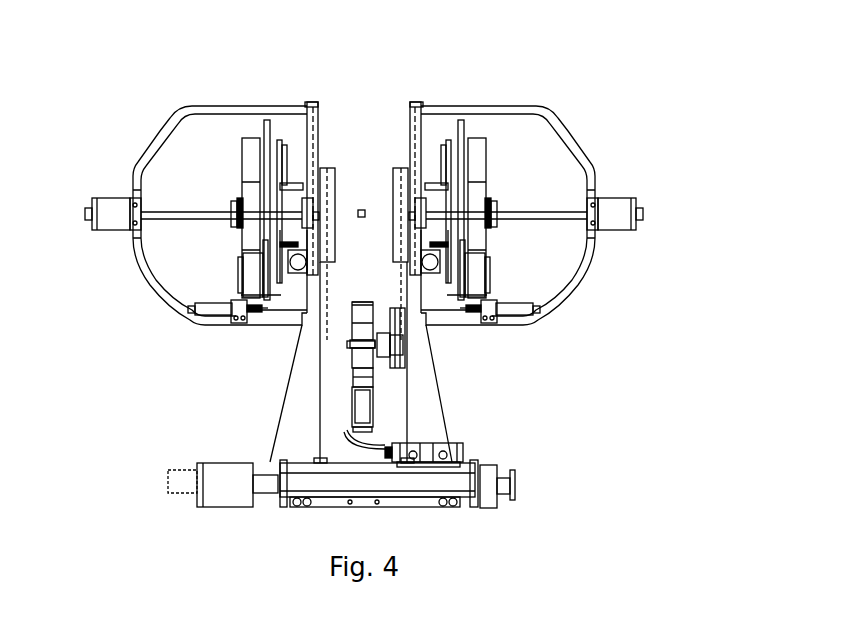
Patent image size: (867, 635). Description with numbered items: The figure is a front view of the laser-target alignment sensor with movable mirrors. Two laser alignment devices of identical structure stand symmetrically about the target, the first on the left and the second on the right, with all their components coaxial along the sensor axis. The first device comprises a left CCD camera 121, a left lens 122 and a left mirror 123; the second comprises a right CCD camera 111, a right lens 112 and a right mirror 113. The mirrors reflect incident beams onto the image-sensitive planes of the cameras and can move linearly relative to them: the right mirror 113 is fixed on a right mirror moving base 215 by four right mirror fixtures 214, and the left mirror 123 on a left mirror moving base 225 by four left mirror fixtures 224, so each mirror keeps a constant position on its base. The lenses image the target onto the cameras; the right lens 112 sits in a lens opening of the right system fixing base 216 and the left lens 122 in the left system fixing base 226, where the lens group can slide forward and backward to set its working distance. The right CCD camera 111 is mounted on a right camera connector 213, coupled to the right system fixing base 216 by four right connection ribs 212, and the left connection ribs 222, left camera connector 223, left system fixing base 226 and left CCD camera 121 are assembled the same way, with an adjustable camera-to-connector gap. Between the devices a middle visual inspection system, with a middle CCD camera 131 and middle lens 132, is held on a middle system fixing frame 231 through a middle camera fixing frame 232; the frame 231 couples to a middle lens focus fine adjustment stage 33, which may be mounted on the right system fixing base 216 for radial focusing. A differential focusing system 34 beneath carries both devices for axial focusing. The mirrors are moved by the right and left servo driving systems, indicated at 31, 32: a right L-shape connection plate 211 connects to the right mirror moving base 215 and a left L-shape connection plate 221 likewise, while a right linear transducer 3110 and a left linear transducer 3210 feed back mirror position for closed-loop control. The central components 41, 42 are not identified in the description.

The right CCD camera 111 is at (623, 213).
The right lens 112 is at (495, 207).
The right mirror 113 is at (472, 193).
The left CCD camera 121 is at (108, 208).
The left lens 122 is at (233, 203).
The left mirror 123 is at (257, 190).
The middle CCD camera 131 is at (363, 417).
The middle lens 132 is at (357, 332).
The right L-shape connection plate 211 is at (447, 158).
The right connection ribs 212 is at (577, 148).
The right camera connector 213 is at (595, 197).
The right mirror fixtures 214 is at (485, 272).
The right mirror moving base 215 is at (462, 278).
The right system fixing base 216 is at (420, 348).
The left L-shape connection plate 221 is at (280, 158).
The left connection ribs 222 is at (152, 145).
The left camera connector 223 is at (135, 192).
The left mirror fixtures 224 is at (240, 267).
The left mirror moving base 225 is at (270, 275).
The left system fixing base 226 is at (305, 345).
The middle system fixing frame 231 is at (388, 350).
The middle camera fixing frame 232 is at (344, 351).
The first bearing seat 31 is at (433, 266).
The second bearing seat 32 is at (297, 262).
The middle lens focus fine adjustment stage 33 is at (404, 366).
The differential focusing system 34 is at (217, 478).
The first clamping block 41 is at (398, 207).
The second clamping block 42 is at (333, 213).
The right linear transducer 3110 is at (510, 312).
The left linear transducer 3210 is at (225, 312).